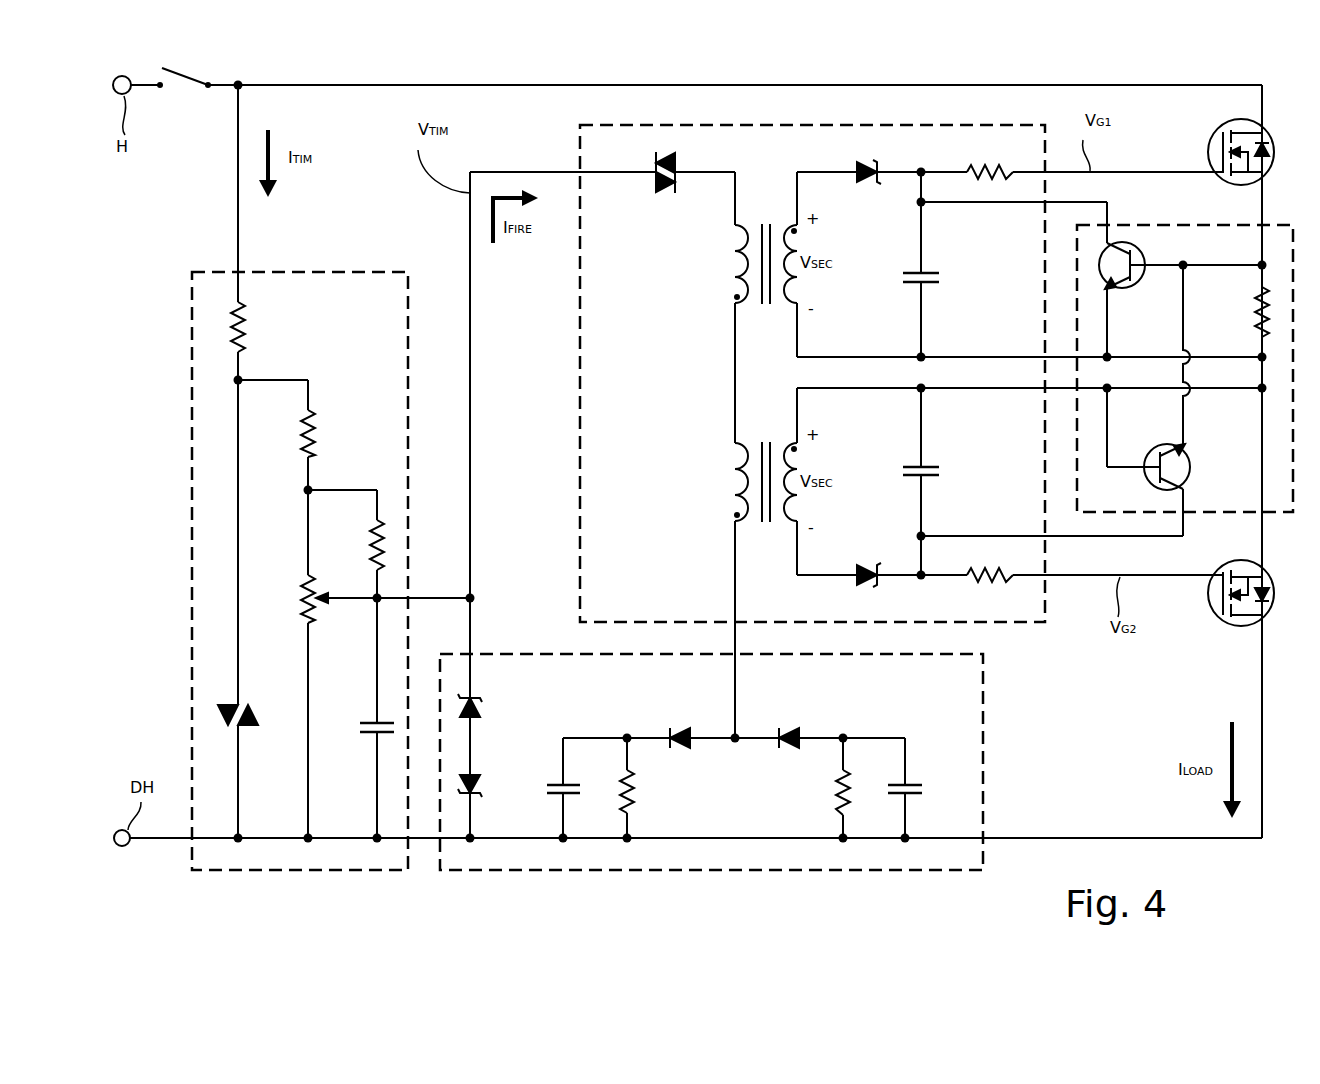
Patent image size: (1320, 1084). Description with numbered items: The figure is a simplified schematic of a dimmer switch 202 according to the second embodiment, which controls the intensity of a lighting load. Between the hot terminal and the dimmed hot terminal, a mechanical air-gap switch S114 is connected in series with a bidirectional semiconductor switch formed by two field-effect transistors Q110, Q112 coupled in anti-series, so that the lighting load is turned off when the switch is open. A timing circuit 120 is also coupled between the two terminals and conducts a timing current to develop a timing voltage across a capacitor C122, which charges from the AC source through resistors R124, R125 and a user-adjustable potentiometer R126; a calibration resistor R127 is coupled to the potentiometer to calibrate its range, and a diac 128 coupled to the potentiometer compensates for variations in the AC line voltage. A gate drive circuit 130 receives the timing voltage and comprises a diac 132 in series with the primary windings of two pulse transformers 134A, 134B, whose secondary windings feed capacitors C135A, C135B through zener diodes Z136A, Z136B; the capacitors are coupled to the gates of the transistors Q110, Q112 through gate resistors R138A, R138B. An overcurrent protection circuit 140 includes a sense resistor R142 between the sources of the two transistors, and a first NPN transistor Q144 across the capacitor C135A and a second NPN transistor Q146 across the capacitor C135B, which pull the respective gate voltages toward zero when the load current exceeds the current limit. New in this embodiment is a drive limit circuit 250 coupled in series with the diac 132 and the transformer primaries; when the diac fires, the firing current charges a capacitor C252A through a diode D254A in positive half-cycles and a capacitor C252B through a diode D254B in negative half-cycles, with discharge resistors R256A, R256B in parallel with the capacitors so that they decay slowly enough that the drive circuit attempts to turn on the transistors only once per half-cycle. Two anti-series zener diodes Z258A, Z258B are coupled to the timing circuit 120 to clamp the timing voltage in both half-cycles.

The mechanical air-gap switch S114 is at (197, 92).
The timing circuit 120 is at (352, 272).
The resistor R124 is at (248, 318).
The resistor R125 is at (318, 433).
The potentiometer R126 is at (302, 592).
The calibration resistor R127 is at (372, 545).
The diac 128 is at (255, 716).
The capacitor C122 is at (362, 727).
The gate drive circuit 130 is at (580, 456).
The diac 132 is at (661, 192).
The pulse transformer 134A is at (728, 263).
The pulse transformer 134B is at (728, 482).
The zener diode Z136A is at (878, 182).
The zener diode Z136B is at (876, 565).
The capacitor C135A is at (930, 288).
The capacitor C135B is at (930, 469).
The gate resistor R138A is at (1008, 166).
The gate resistor R138B is at (1005, 580).
The field-effect transistor Q110 is at (1228, 122).
The field-effect transistor Q112 is at (1233, 628).
The overcurrent protection circuit 140 is at (1222, 225).
The first NPN bipolar junction transistor Q144 is at (1148, 282).
The second NPN bipolar junction transistor Q146 is at (1192, 468).
The sense resistor R142 is at (1252, 330).
The drive limit circuit 250 is at (983, 778).
The zener diode Z258A is at (483, 710).
The zener diode Z258B is at (483, 783).
The capacitor C252A is at (550, 796).
The capacitor C252B is at (918, 785).
The diode D254A is at (685, 727).
The diode D254B is at (785, 727).
The discharge resistor R256A is at (637, 795).
The discharge resistor R256B is at (836, 806).
The dimmer switch 202 is at (1212, 873).